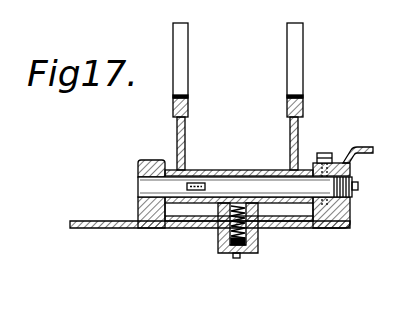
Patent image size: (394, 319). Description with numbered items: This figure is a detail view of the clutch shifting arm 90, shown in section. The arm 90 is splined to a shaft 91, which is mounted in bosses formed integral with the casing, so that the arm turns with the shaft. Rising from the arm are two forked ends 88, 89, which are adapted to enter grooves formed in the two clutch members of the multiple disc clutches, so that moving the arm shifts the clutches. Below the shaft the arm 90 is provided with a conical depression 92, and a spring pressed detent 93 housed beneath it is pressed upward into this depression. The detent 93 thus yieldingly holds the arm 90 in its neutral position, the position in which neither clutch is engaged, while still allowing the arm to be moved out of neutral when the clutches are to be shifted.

The forked end 88 is at (292, 70).
The forked end 89 is at (190, 67).
The clutch shifting arm 90 is at (216, 171).
The shaft 91 is at (147, 180).
The conical depression 92 is at (268, 227).
The spring pressed detent 93 is at (220, 228).